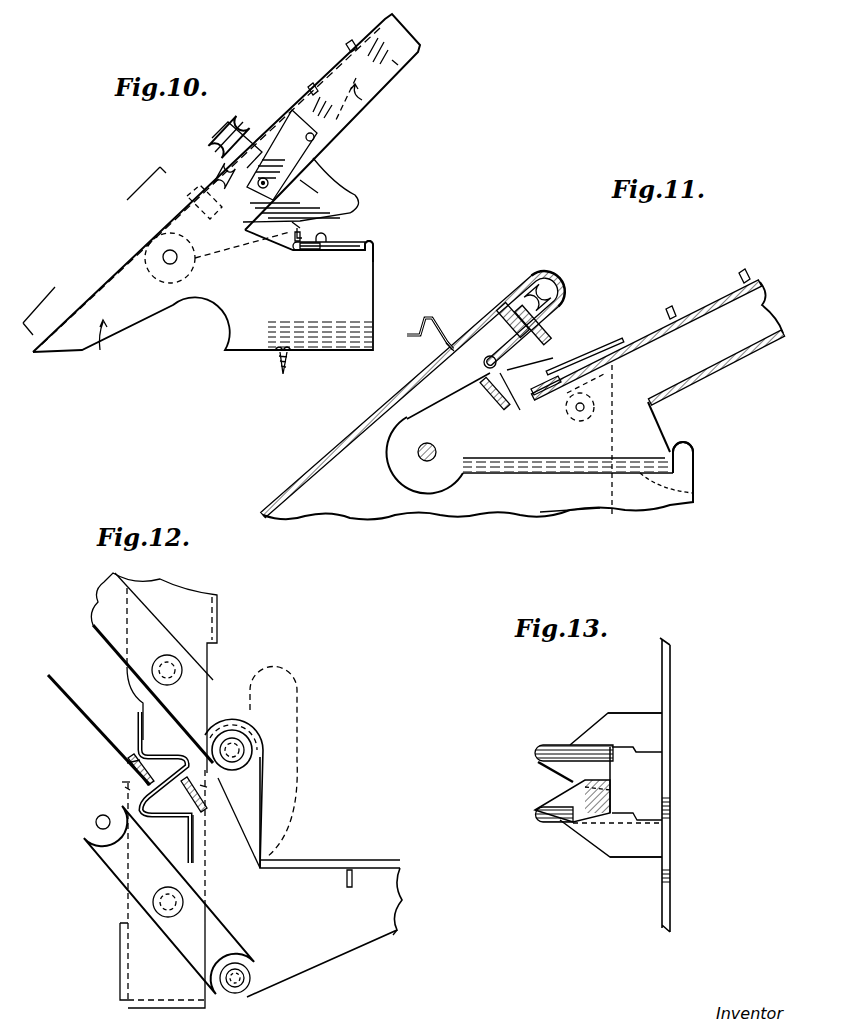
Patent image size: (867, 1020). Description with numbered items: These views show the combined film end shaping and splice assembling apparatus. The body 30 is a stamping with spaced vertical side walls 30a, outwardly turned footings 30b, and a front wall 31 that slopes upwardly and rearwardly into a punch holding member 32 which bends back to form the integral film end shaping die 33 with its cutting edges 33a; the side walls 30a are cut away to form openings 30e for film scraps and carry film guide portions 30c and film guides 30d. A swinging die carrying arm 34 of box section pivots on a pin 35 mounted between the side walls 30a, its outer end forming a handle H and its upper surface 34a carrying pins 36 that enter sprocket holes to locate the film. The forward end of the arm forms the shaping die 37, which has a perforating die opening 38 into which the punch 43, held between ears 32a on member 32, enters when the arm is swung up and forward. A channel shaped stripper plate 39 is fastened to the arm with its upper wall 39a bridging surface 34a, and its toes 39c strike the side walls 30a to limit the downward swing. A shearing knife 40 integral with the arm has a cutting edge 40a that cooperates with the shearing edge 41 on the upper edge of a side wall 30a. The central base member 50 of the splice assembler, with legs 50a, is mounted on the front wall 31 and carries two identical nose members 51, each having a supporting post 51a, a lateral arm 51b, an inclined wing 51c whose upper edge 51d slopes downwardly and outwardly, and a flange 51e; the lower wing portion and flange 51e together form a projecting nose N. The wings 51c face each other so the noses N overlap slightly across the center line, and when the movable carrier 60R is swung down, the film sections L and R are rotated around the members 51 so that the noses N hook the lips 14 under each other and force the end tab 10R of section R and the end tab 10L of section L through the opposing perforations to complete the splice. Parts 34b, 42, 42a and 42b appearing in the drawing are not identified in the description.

In FIG. 10, the body 30 is at (203, 305).
In FIG. 11, the body 30 is at (445, 514).
In FIG. 10, the side walls 30a is at (360, 285).
In FIG. 11, the side walls 30a is at (566, 513).
In FIG. 10, the footings 30b is at (250, 357).
In FIG. 10, the film guide portions 30c is at (374, 248).
In FIG. 11, the film guide portions 30c is at (694, 455).
In FIG. 10, the film guide 30d is at (293, 234).
In FIG. 11, the film guide 30d is at (612, 518).
In FIG. 10, the openings 30e is at (200, 318).
In FIG. 10, the front wall 31 is at (193, 173).
In FIG. 11, the front wall 31 is at (382, 409).
In FIG. 10, the punch holding member 32 is at (266, 134).
In FIG. 11, the punch holding member 32 is at (556, 312).
In FIG. 10, the punch holding ears 32a is at (232, 130).
In FIG. 11, the punch holding ears 32a is at (525, 275).
In FIG. 10, the film end shaping member 33 is at (222, 210).
In FIG. 11, the film end shaping member 33 is at (484, 367).
In FIG. 11, the edges 33a is at (543, 358).
In FIG. 10, the swinging die carrying arm 34 is at (363, 100).
In FIG. 11, the swinging die carrying arm 34 is at (764, 303).
In FIG. 11, the upper surface 34a is at (670, 310).
In FIG. 11, the handle lug 34b is at (486, 398).
In FIG. 10, the pin 35 is at (167, 265).
In FIG. 11, the pin 35 is at (420, 462).
In FIG. 10, the pins 36 is at (352, 44).
In FIG. 11, the pins 36 is at (740, 282).
In FIG. 11, the film end shaping die 37 is at (505, 410).
In FIG. 11, the perforating die opening 38 is at (623, 367).
In FIG. 10, the stripper plate 39 is at (281, 110).
In FIG. 10, the upper side wall 39a is at (290, 104).
In FIG. 11, the upper side wall 39a is at (612, 342).
In FIG. 10, the toes 39c is at (313, 190).
In FIG. 11, the toes 39c is at (548, 477).
In FIG. 10, the shearing knife 40 is at (337, 200).
In FIG. 11, the shearing knife 40 is at (650, 417).
In FIG. 10, the cutting edge 40a is at (330, 220).
In FIG. 11, the cutting edge 40a is at (657, 500).
In FIG. 11, the shearing edge 41 is at (697, 493).
In FIG. 10, the latch 42 is at (350, 252).
In FIG. 10, the latch member 42a is at (322, 252).
In FIG. 10, the latch stud 42b is at (297, 243).
In FIG. 10, the perforating punch 43 is at (258, 183).
In FIG. 11, the perforating punch 43 is at (548, 295).
In FIG. 10, the central base member 50 is at (94, 238).
In FIG. 11, the central base member 50 is at (410, 326).
In FIG. 12, the central base member 50 is at (137, 913).
In FIG. 13, the central base member 50 is at (666, 698).
In FIG. 11, the supporting legs 50a is at (450, 347).
In FIG. 12, the supporting legs 50a is at (217, 625).
In FIG. 12, the nose members 51 is at (139, 737).
In FIG. 13, the nose members 51 is at (590, 727).
In FIG. 12, the supporting post 51a is at (200, 847).
In FIG. 13, the supporting post 51a is at (623, 722).
In FIG. 12, the arm portion 51b is at (169, 741).
In FIG. 13, the arm portion 51b is at (560, 822).
In FIG. 12, the wing 51c is at (172, 760).
In FIG. 13, the wing 51c is at (553, 754).
In FIG. 12, the upper edge 51d is at (207, 727).
In FIG. 13, the upper edge 51d is at (538, 793).
In FIG. 13, the flange 51e is at (603, 803).
In FIG. 12, the lips 14 is at (122, 782).
In FIG. 12, the right unit 10R is at (125, 787).
In FIG. 12, the left unit 10L is at (200, 785).
In FIG. 12, the film carrier 60R is at (407, 908).
In FIG. 10, the handle member H is at (398, 65).
In FIG. 12, the film section L is at (68, 690).
In FIG. 12, the film section R is at (307, 870).
In FIG. 12, the nose N is at (127, 763).
In FIG. 13, the nose N is at (603, 770).